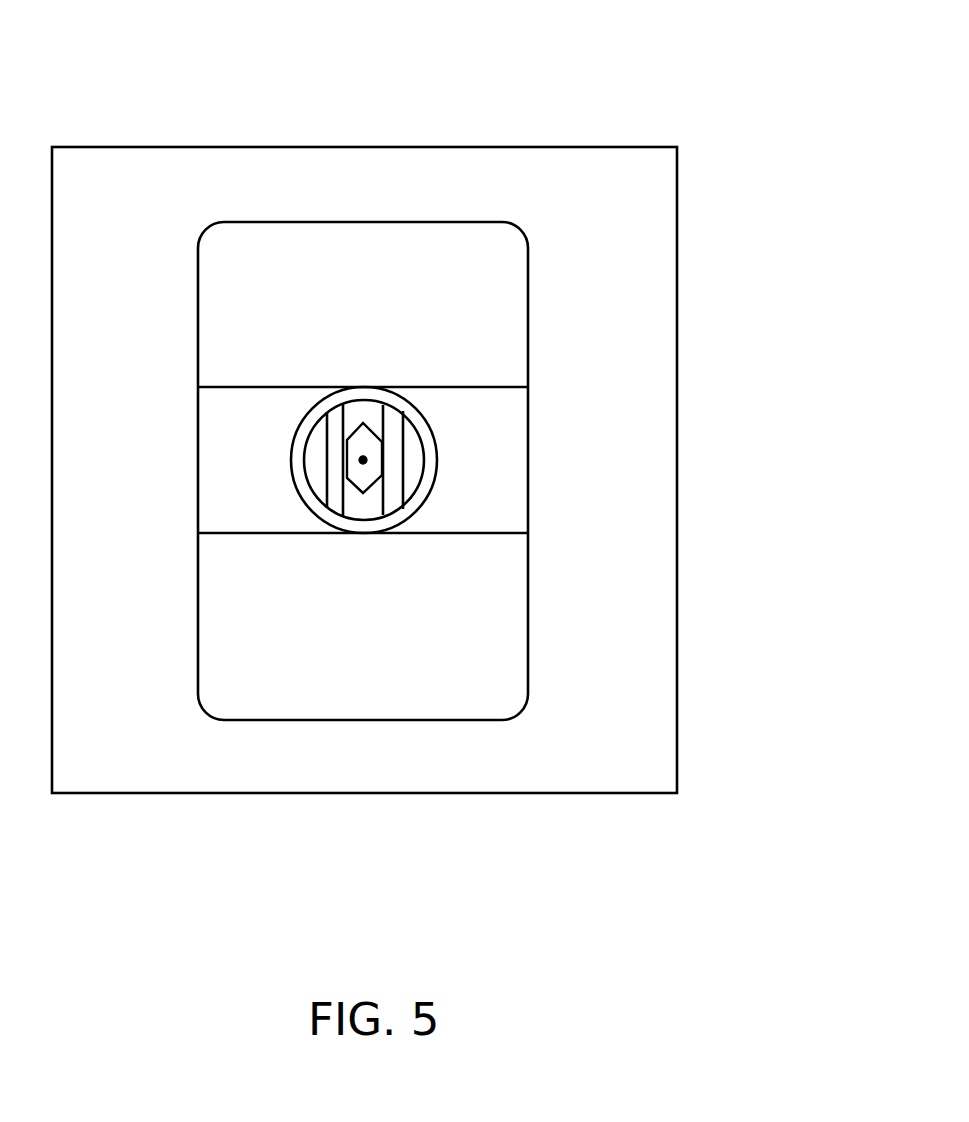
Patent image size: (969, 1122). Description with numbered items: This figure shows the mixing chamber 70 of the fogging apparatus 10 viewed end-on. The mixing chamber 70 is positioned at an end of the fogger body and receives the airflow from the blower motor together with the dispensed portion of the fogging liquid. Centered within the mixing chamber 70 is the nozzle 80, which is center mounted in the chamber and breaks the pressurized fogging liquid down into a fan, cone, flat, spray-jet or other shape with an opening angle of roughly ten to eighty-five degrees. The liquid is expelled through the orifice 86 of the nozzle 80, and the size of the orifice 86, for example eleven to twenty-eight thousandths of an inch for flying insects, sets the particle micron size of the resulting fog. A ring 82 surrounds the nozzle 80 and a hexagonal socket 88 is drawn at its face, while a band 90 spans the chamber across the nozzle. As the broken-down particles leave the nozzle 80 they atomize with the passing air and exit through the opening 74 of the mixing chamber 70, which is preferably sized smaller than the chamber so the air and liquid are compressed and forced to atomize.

The apparatus 10 is at (567, 66).
The mixing chamber 70 is at (655, 297).
The opening 74 is at (490, 713).
The nozzle 80 is at (353, 413).
The washer ring 82 is at (408, 512).
The orifice 86 is at (359, 461).
The hexagonal socket 88 is at (375, 475).
The band 90 is at (500, 470).